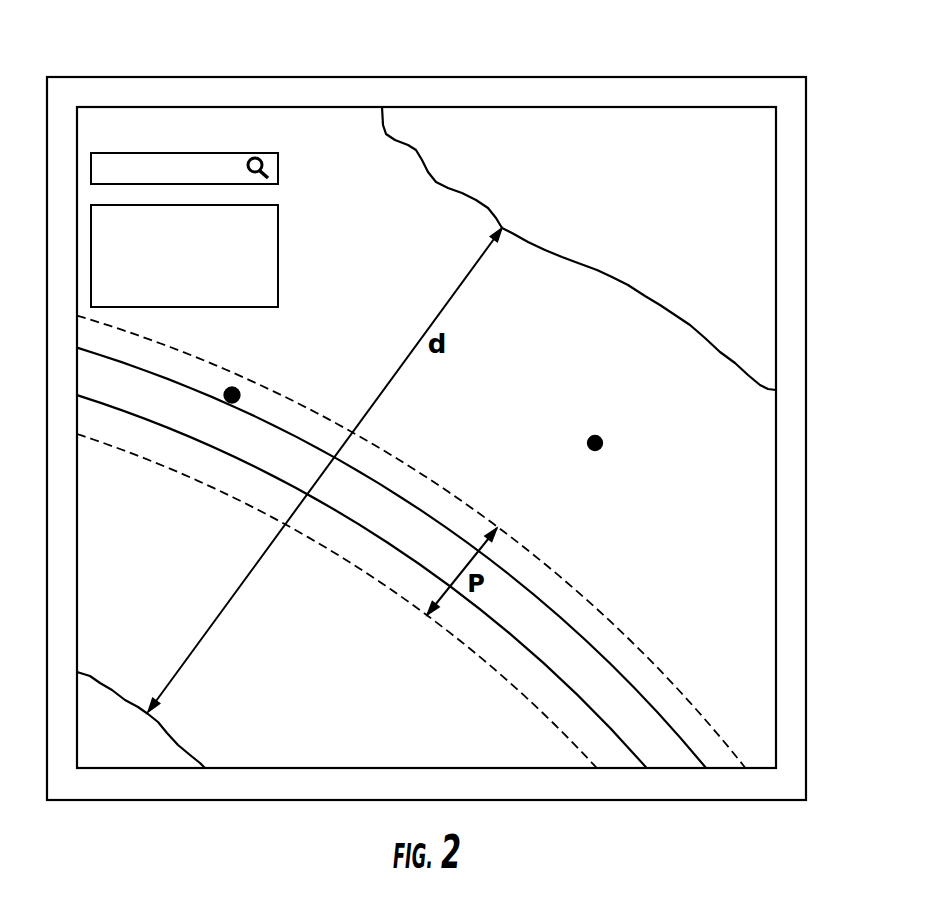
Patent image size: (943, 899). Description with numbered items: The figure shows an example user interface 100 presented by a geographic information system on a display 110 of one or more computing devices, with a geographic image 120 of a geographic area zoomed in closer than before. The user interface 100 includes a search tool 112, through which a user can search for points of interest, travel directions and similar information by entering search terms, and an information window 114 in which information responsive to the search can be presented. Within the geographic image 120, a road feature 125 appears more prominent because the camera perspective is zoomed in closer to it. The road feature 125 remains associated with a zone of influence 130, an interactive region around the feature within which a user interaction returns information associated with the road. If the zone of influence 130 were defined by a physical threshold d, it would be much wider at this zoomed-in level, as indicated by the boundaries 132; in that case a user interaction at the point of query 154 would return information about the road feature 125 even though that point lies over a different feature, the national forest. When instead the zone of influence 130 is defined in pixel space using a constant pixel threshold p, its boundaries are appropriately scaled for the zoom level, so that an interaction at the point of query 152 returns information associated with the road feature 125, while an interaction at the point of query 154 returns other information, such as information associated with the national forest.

The user interface 100 is at (776, 155).
The display 110 is at (657, 77).
The search tool 112 is at (277, 168).
The information window 114 is at (275, 250).
The geographic image 120 is at (755, 270).
The road feature 125 is at (547, 610).
The zone of influence 130 is at (448, 495).
The boundaries 132 is at (607, 272).
The point of query 152 is at (238, 388).
The point of query 154 is at (602, 440).